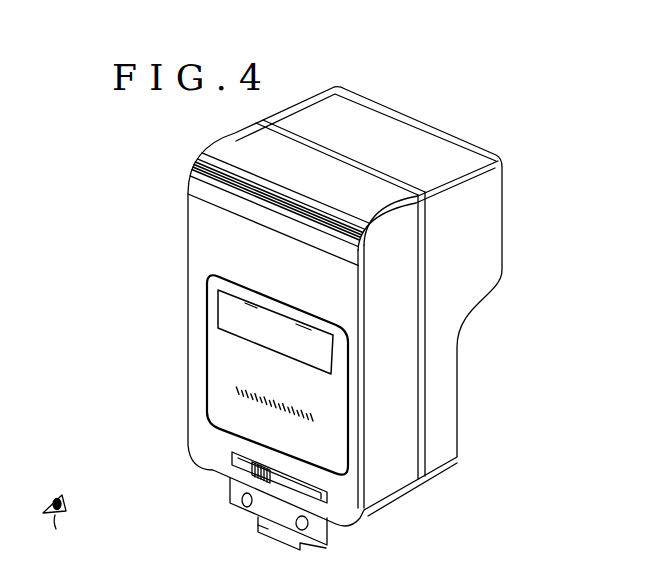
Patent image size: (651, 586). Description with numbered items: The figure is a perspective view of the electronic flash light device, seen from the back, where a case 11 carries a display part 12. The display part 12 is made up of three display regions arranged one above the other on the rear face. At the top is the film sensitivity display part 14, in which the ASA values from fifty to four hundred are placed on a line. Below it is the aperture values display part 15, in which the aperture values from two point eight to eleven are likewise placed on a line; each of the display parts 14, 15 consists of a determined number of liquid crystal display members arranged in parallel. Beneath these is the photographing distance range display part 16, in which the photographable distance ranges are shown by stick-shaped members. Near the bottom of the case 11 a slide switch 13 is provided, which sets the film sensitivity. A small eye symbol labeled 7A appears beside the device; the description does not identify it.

The case 11 is at (473, 388).
The display part 12 is at (222, 373).
The slide switch 13 is at (247, 470).
The film sensitivity display part 14 is at (218, 317).
The aperture values display part 15 is at (374, 414).
The photographing distance range display part 16 is at (347, 548).
The eye of observer 7A is at (56, 530).